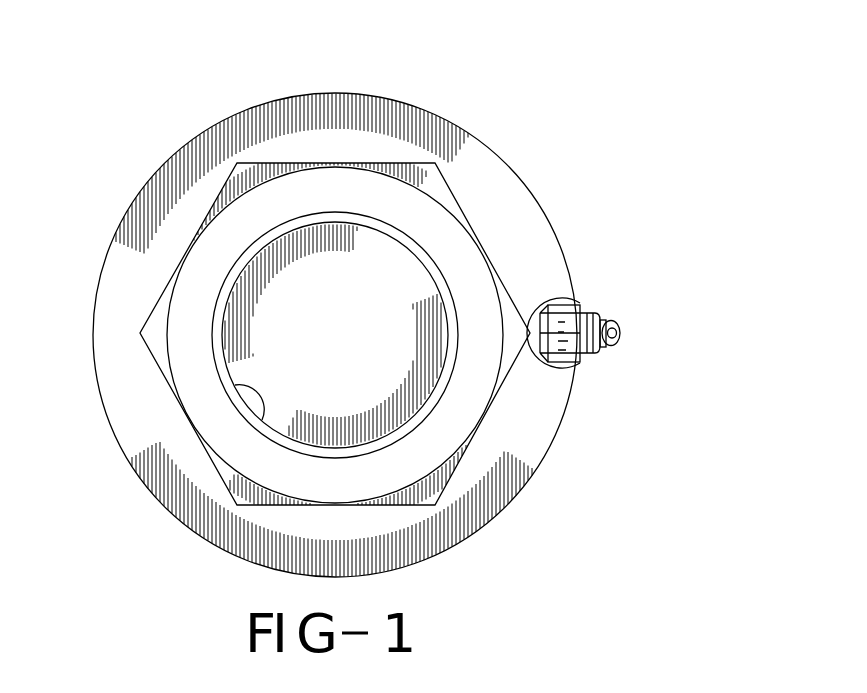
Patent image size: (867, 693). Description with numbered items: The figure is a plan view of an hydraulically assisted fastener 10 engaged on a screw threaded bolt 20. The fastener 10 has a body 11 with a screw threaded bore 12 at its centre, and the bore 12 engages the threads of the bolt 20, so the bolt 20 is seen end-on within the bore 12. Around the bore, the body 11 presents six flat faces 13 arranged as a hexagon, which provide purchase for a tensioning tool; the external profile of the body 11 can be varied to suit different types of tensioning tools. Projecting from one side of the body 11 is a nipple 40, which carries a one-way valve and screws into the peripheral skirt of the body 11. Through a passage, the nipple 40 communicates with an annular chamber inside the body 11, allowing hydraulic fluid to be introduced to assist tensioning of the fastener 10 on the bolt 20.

The hydraulic fastener 10 is at (480, 138).
The body 11 is at (445, 428).
The screw threaded bore 12 is at (230, 388).
The flat faces 13 is at (163, 288).
The screw threaded bolt 20 is at (321, 348).
The nipple 40 is at (607, 312).